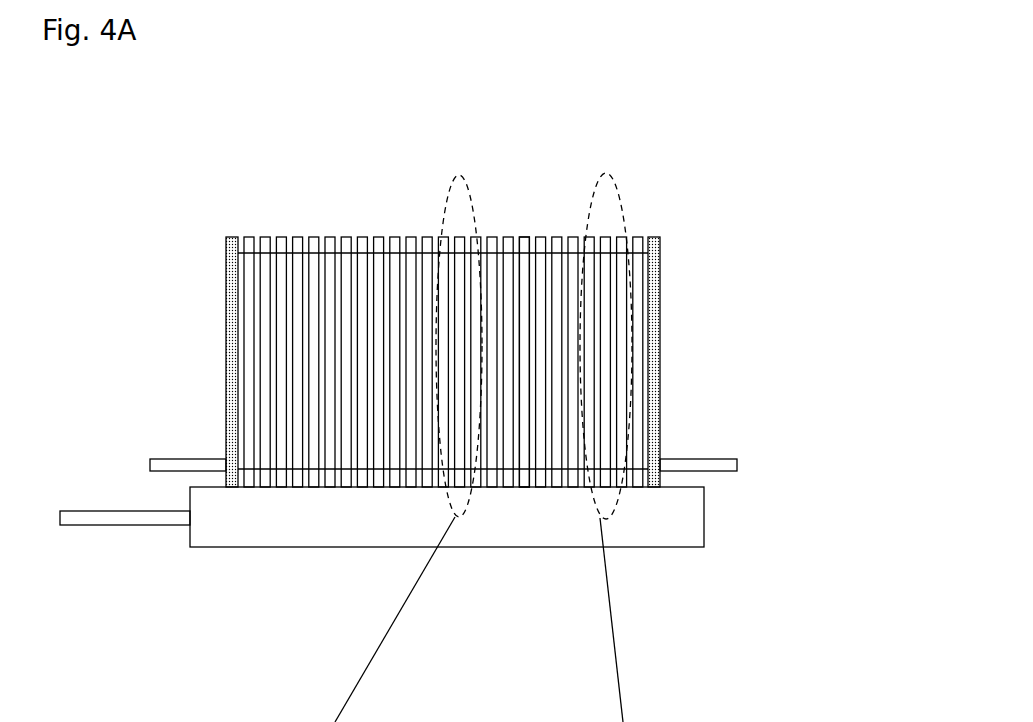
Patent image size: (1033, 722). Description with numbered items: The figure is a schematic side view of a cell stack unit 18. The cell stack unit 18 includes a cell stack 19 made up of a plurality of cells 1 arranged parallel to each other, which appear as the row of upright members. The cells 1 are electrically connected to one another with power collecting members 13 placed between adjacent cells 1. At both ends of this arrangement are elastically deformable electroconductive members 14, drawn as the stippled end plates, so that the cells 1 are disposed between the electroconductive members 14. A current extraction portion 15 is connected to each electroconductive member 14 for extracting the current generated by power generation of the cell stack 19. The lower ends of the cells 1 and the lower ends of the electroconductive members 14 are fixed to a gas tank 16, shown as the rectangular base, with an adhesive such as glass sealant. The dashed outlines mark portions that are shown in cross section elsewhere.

The cell 1 is at (520, 248).
The power collecting member 13 is at (368, 256).
The electroconductive member 14 is at (236, 370).
The current extraction portion 15 is at (705, 465).
The gas tank 16 is at (704, 530).
The cell stack unit 18 is at (438, 408).
The cell stack 19 is at (442, 408).